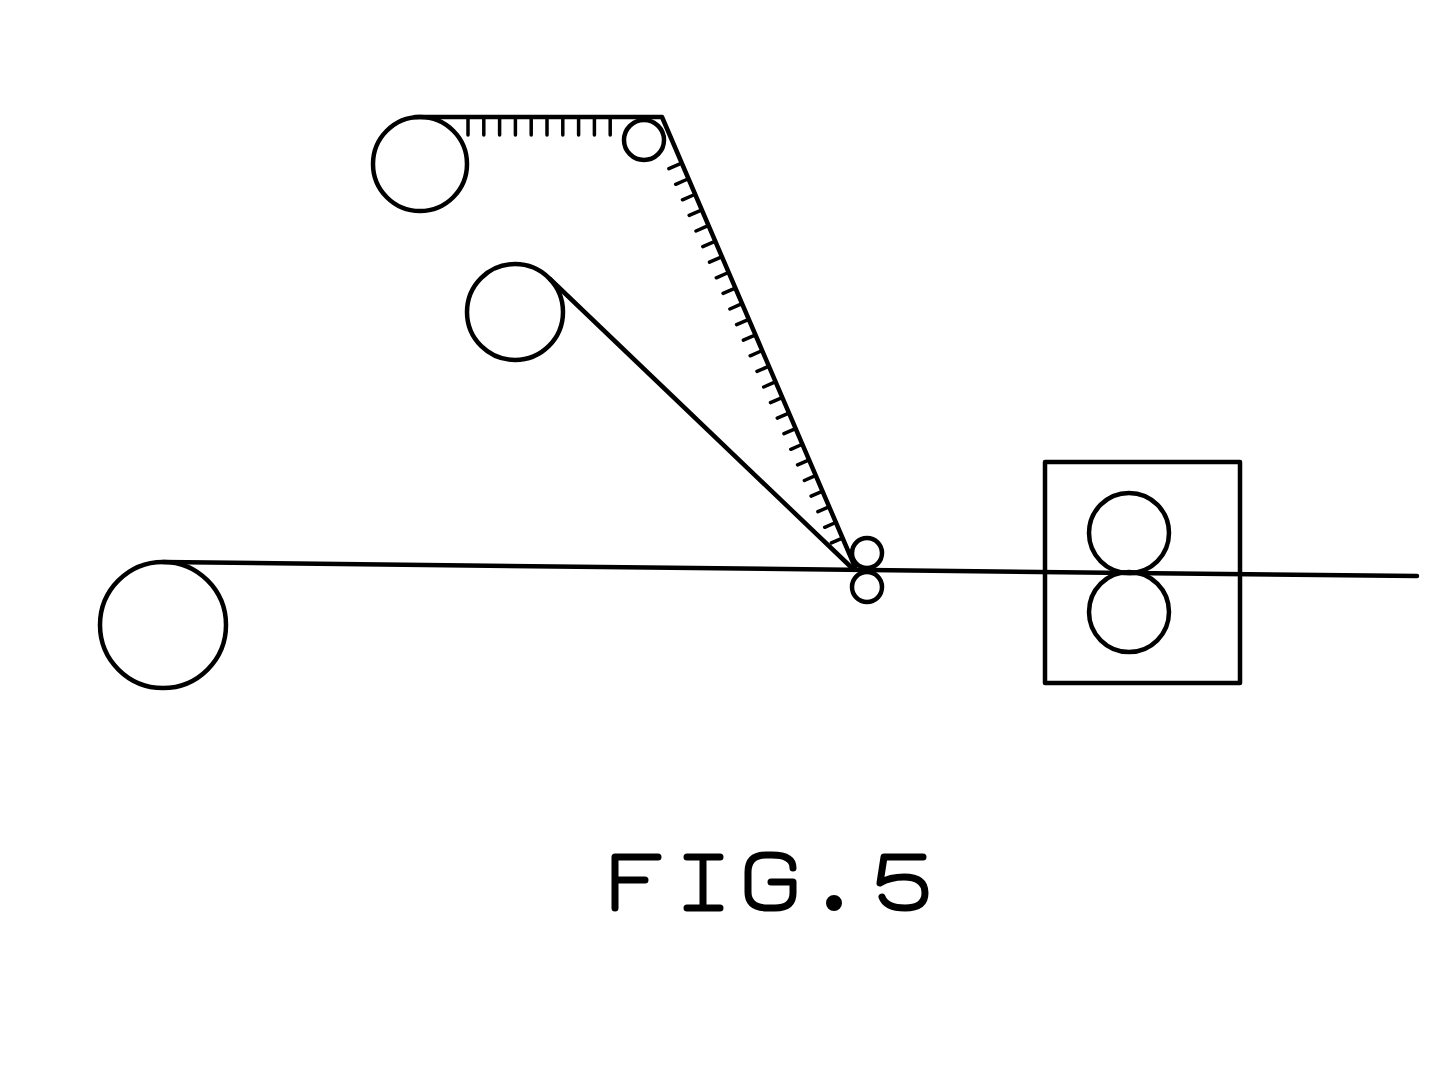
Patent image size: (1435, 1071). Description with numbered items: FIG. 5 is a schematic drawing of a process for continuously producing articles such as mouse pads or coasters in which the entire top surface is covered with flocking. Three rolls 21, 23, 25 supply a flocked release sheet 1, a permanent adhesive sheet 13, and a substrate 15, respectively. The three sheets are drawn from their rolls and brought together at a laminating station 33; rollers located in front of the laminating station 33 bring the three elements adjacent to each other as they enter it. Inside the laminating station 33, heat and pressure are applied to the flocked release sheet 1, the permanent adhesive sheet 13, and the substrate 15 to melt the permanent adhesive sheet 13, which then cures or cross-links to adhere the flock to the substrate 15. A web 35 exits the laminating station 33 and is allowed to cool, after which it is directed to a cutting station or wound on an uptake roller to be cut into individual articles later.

The flocked release sheet 1 is at (507, 117).
The permanent adhesive sheet 13 is at (603, 335).
The substrate 15 is at (282, 562).
The roll 21 is at (372, 157).
The roll 23 is at (468, 300).
The roll 25 is at (218, 657).
The laminating station 33 is at (1087, 462).
The web 35 is at (1312, 575).